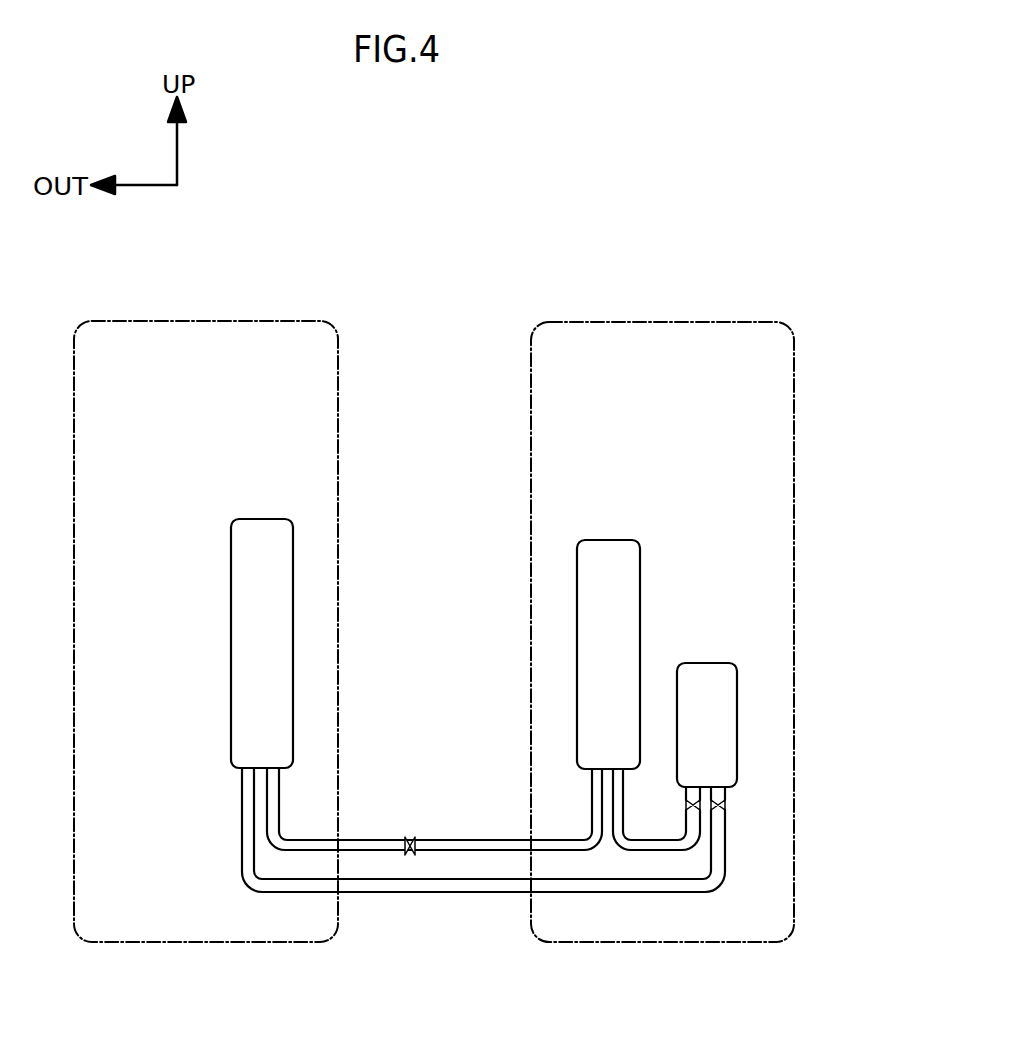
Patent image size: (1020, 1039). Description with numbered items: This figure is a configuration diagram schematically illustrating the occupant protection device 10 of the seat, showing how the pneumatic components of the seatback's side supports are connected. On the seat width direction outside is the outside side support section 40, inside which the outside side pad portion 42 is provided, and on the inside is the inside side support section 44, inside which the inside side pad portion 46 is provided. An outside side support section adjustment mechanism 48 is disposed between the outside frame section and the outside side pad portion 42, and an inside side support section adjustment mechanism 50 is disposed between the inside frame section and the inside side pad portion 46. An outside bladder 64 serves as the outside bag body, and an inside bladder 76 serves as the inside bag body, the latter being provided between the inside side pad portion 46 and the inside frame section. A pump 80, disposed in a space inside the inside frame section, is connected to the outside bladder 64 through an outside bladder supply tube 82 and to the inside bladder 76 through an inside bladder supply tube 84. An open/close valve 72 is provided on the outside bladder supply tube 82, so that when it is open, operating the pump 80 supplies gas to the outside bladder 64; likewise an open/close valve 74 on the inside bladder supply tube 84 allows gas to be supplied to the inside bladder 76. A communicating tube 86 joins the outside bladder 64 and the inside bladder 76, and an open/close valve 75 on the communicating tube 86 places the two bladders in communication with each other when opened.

The vehicle seat 10 is at (721, 240).
The outside side support section 40 is at (206, 631).
The outside side pad portion 42 is at (341, 465).
The inside side support section 44 is at (662, 632).
The inside side pad portion 46 is at (528, 387).
The outside side support section adjustment mechanism 48 is at (211, 299).
The inside side support section adjustment mechanism 50 is at (646, 299).
The outside bladder 64 is at (262, 524).
The open/close valve 72 is at (728, 806).
The open/close valve 74 is at (686, 804).
The open/close valve 75 is at (411, 835).
The inside bladder 76 is at (609, 546).
The pump 80 is at (704, 672).
The outside bladder supply tube 82 is at (447, 894).
The inside bladder supply tube 84 is at (650, 852).
The communicating tube 86 is at (487, 839).